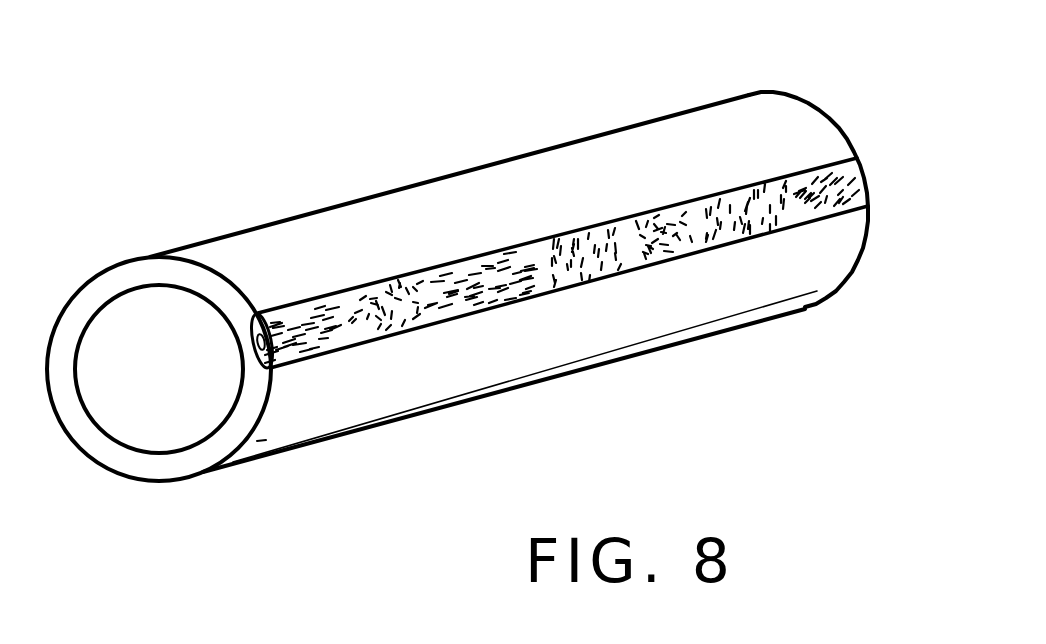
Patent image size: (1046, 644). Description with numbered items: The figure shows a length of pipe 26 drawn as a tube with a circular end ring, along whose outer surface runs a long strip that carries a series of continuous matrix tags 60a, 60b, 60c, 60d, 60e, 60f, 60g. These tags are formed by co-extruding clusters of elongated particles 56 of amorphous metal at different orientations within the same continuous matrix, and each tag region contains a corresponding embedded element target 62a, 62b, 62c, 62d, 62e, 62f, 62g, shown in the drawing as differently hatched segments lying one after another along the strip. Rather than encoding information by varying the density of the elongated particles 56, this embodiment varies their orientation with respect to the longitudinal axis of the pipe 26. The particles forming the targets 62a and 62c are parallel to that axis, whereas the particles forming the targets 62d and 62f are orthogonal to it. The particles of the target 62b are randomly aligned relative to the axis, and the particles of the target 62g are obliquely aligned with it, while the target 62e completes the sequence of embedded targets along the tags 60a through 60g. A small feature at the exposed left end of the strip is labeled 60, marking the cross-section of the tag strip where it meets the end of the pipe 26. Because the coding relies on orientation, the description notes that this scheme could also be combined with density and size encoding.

The pipe 26 is at (400, 396).
The elongated particles 56 is at (343, 320).
The fiber core 60 is at (258, 346).
The continuous matrix tag 60a is at (275, 306).
The continuous matrix tag 60b is at (371, 281).
The continuous matrix tag 60c is at (462, 257).
The continuous matrix tag 60d is at (577, 227).
The continuous matrix tag 60e is at (652, 208).
The continuous matrix tag 60f is at (735, 186).
The continuous matrix tag 60g is at (812, 166).
The element target 62a is at (303, 345).
The element target 62b is at (387, 323).
The element target 62c is at (478, 300).
The element target 62d is at (593, 263).
The element target 62e is at (657, 250).
The element target 62f is at (737, 233).
The element target 62g is at (832, 205).